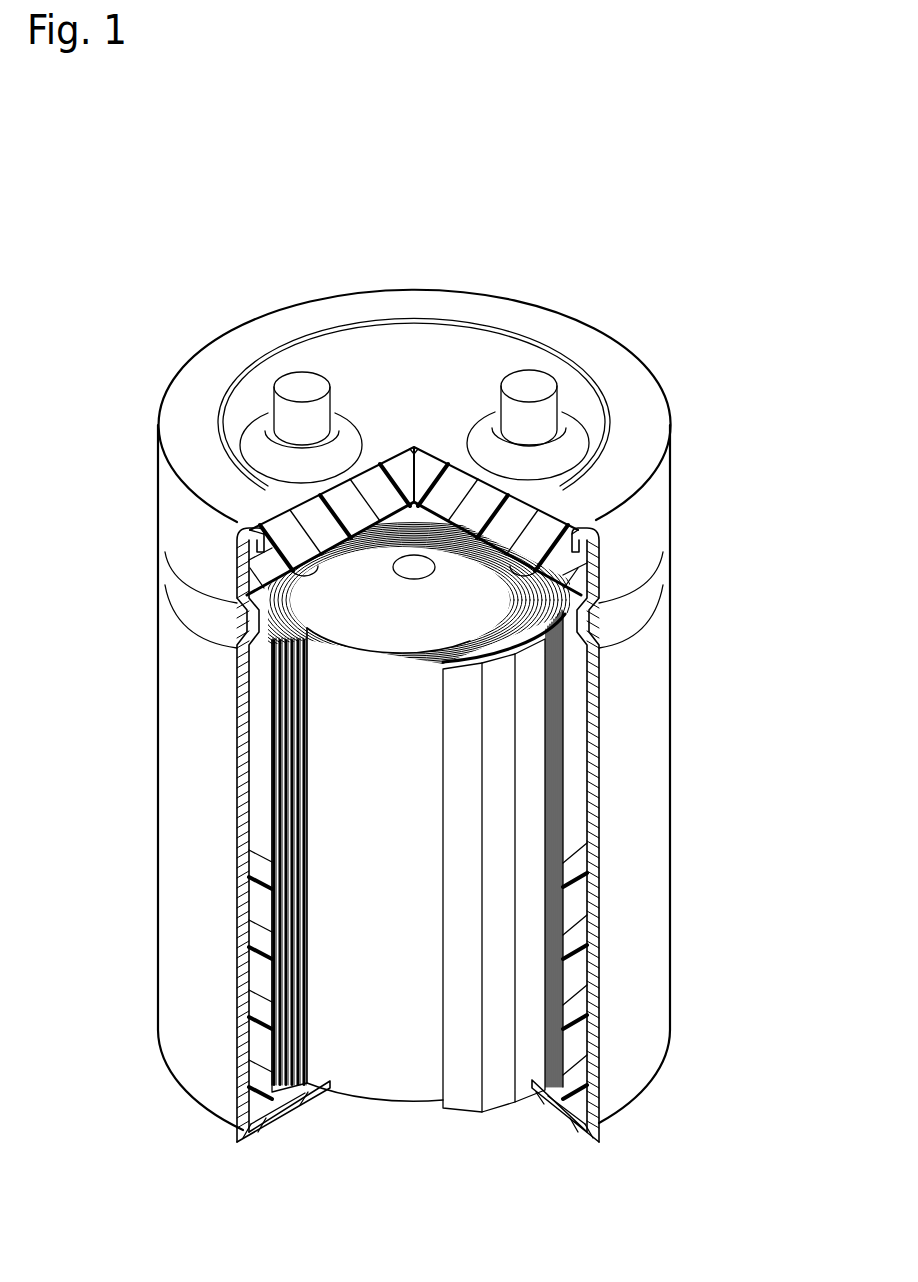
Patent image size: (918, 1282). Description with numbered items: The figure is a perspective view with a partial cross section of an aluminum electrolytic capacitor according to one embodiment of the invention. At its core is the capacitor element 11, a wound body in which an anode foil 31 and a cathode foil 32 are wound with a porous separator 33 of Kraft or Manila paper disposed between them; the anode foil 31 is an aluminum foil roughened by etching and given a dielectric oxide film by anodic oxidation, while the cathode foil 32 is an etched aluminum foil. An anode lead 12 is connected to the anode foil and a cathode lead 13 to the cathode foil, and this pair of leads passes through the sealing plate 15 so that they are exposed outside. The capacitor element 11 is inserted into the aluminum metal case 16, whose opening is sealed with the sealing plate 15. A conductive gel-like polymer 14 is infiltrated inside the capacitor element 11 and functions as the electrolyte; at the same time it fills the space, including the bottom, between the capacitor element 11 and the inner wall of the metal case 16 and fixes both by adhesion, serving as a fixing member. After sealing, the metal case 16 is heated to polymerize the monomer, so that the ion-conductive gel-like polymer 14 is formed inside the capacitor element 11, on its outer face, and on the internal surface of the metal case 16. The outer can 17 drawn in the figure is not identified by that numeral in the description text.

The capacitor element 11 is at (387, 1063).
The anode lead 12 is at (538, 382).
The cathode lead 13 is at (297, 390).
The conductive gel-like polymer 14 is at (578, 925).
The sealing plate 15 is at (377, 357).
The metal case 16 is at (585, 1140).
The outer case (can) 17 is at (660, 742).
The anode foil 31 is at (530, 1067).
The cathode foil 32 is at (457, 1093).
The separator 33 is at (497, 1083).